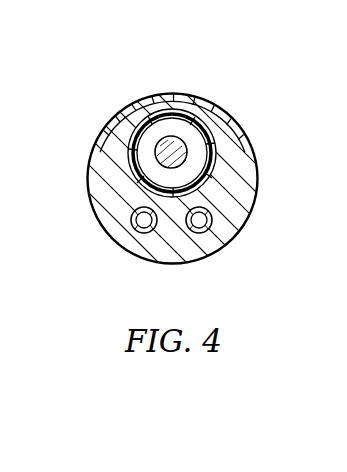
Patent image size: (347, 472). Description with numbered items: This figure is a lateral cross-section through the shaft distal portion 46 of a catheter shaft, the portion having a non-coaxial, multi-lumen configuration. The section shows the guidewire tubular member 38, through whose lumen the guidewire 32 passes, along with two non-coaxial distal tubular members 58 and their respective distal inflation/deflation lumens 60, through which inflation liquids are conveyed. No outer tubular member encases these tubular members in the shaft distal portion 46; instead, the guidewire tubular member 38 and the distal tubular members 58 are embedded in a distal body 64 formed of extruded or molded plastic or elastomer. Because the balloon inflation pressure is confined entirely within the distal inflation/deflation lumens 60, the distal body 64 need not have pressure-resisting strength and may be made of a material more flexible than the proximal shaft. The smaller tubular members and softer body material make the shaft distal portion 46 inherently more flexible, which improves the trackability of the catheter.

The shaft distal portion 46 is at (134, 82).
The guidewire 32 is at (169, 137).
The guidewire tubular member 38 is at (219, 143).
The distal body 64 is at (255, 205).
The distal tubular members 58 is at (131, 227).
The distal inflation/deflation lumens 60 is at (143, 225).